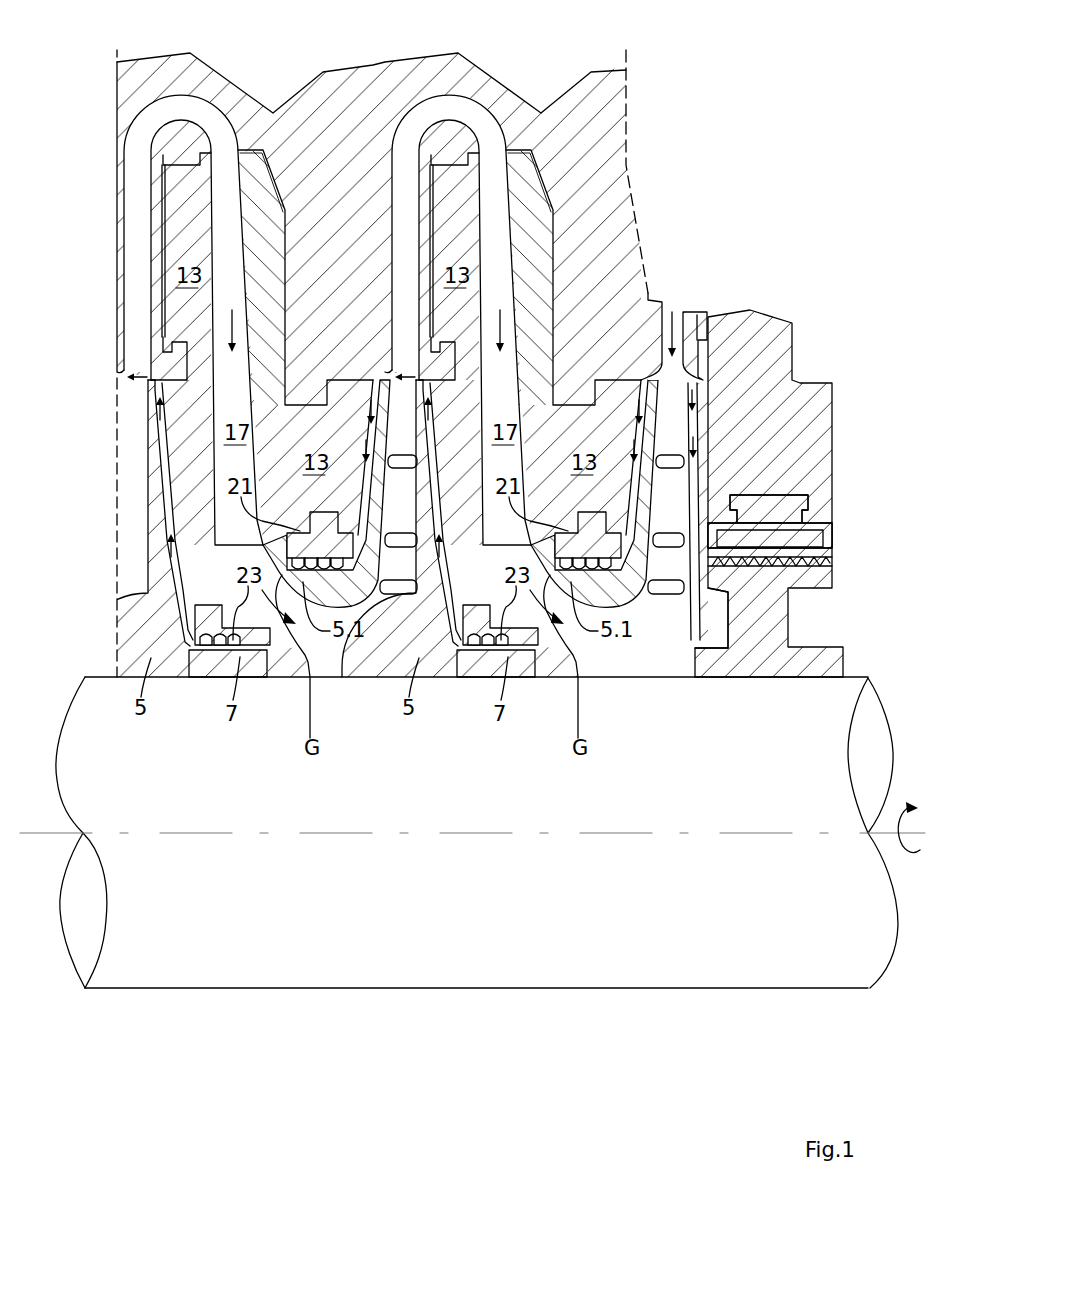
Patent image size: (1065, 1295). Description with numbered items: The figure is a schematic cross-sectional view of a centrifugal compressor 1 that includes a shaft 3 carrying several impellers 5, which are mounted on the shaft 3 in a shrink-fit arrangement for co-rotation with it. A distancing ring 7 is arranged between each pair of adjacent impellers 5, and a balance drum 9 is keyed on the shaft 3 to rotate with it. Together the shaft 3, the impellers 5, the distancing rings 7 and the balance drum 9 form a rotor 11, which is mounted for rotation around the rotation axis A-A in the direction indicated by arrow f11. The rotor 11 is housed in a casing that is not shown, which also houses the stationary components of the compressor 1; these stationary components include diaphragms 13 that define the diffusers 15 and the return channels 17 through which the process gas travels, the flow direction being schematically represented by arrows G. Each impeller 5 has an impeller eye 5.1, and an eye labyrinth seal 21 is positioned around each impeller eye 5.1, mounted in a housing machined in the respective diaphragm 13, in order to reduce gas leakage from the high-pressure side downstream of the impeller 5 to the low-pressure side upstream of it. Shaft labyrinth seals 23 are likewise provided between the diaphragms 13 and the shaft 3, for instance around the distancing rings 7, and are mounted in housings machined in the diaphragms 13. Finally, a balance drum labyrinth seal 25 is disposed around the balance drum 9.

The centrifugal compressor 1 is at (805, 170).
The shaft 3 is at (748, 972).
The impeller 5 is at (675, 658).
The impeller eye 5.1 is at (460, 511).
The distancing ring 7 is at (362, 688).
The balance drum 9 is at (773, 633).
The rotor 11 is at (903, 648).
The diaphragm 13 is at (332, 105).
The diffuser 15 is at (671, 302).
The return channel 17 is at (323, 377).
The eye labyrinth seal 21 is at (424, 522).
The shaft labyrinth seal 23 is at (366, 604).
The balance drum labyrinth seal 25 is at (813, 542).
The arrows representing direction of process gas flow G is at (425, 667).
The rotation axis A is at (481, 834).
The arrow indicating rotor rotation f11 is at (898, 800).